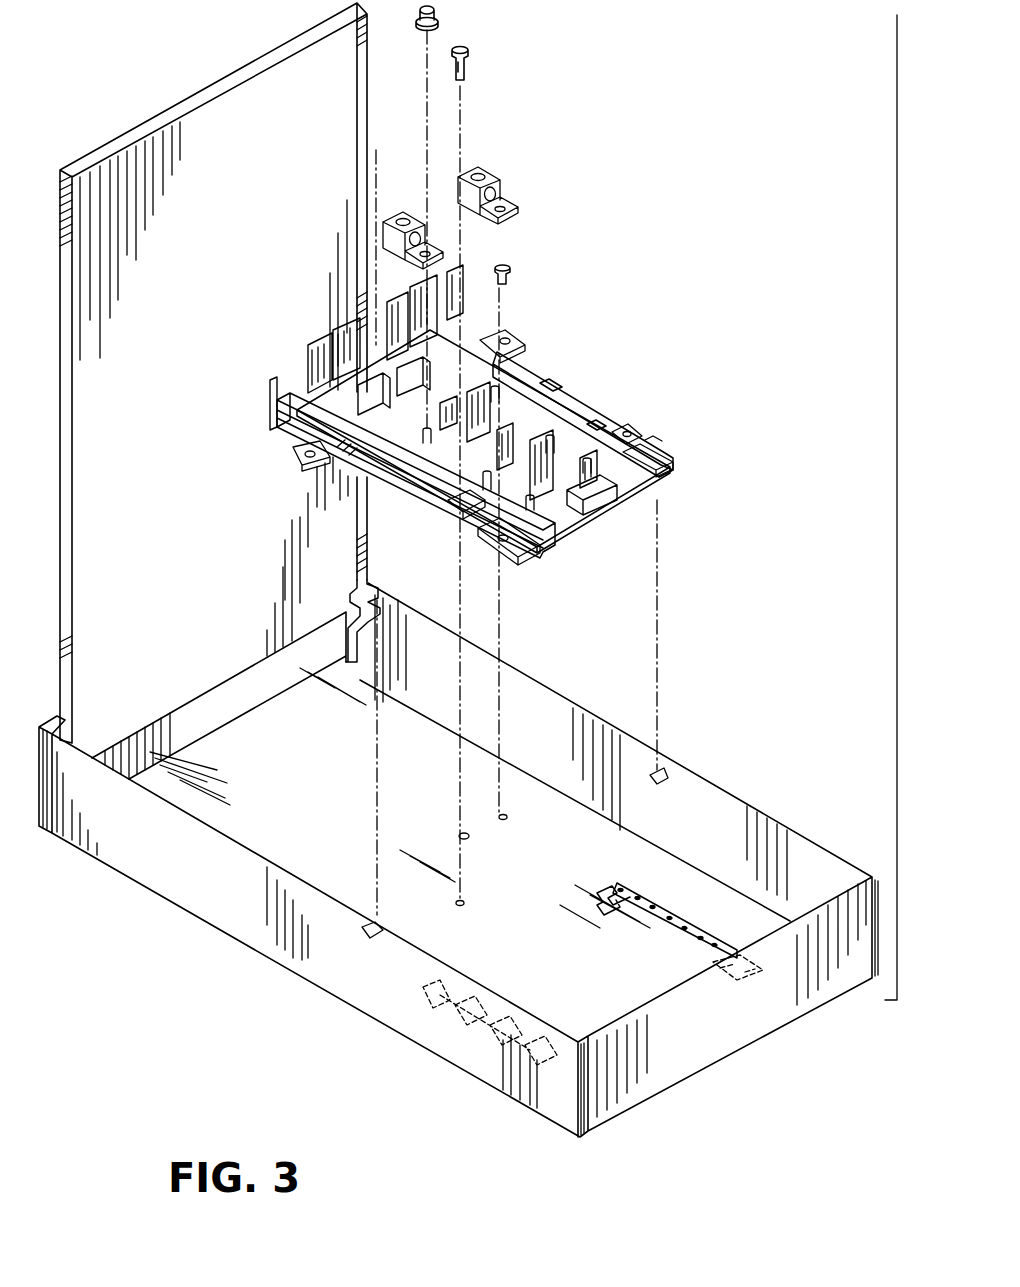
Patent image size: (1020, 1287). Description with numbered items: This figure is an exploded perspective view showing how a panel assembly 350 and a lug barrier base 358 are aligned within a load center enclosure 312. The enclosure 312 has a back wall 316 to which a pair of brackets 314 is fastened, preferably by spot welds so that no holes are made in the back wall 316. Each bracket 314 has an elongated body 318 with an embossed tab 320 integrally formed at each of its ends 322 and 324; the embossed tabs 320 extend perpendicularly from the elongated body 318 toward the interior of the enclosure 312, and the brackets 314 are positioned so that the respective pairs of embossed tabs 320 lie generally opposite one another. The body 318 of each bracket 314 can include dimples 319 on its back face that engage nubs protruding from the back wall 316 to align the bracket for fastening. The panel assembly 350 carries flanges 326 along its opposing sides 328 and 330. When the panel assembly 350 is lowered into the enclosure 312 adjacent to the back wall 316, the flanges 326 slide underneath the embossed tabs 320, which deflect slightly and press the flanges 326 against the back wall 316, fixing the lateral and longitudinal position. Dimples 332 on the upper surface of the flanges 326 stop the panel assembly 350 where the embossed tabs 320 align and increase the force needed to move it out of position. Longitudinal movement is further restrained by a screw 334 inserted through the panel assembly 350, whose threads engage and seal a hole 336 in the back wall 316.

The load center enclosure 312 is at (697, 803).
The brackets 314 is at (687, 938).
The back wall 316 is at (673, 885).
The elongated body 318 is at (687, 940).
The dimples 319 is at (660, 918).
The embossed tabs 320 is at (600, 902).
The end 322 is at (613, 884).
The end 324 is at (723, 937).
The flanges 326 is at (672, 463).
The side 328 is at (577, 403).
The side 330 is at (462, 512).
The dimples 332 is at (623, 443).
The screw 334 is at (465, 68).
The hole 336 is at (455, 905).
The panel assembly 350 is at (653, 447).
The lug barrier base 358 is at (523, 365).